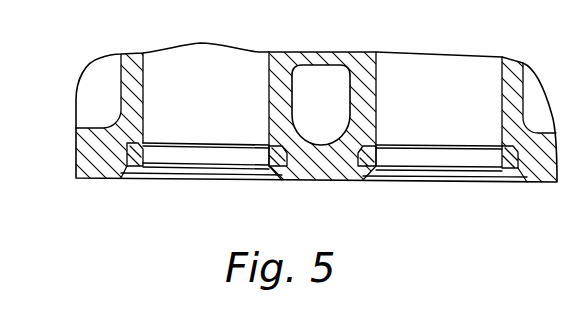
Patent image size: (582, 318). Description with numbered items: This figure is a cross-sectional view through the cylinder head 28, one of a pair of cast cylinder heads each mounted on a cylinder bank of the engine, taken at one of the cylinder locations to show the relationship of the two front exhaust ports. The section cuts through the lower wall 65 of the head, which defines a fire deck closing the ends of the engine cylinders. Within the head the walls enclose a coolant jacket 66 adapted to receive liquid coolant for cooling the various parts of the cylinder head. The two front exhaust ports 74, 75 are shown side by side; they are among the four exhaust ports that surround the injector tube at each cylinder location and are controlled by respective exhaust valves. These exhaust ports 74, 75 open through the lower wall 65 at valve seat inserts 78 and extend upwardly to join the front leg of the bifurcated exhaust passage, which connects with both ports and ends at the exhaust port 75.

The cylinder head 28 is at (106, 73).
The lower wall 65 is at (111, 178).
The coolant jacket 66 is at (325, 77).
The exhaust port 74 is at (376, 68).
The exhaust port 75 is at (269, 70).
The valve seat inserts 78 is at (136, 164).